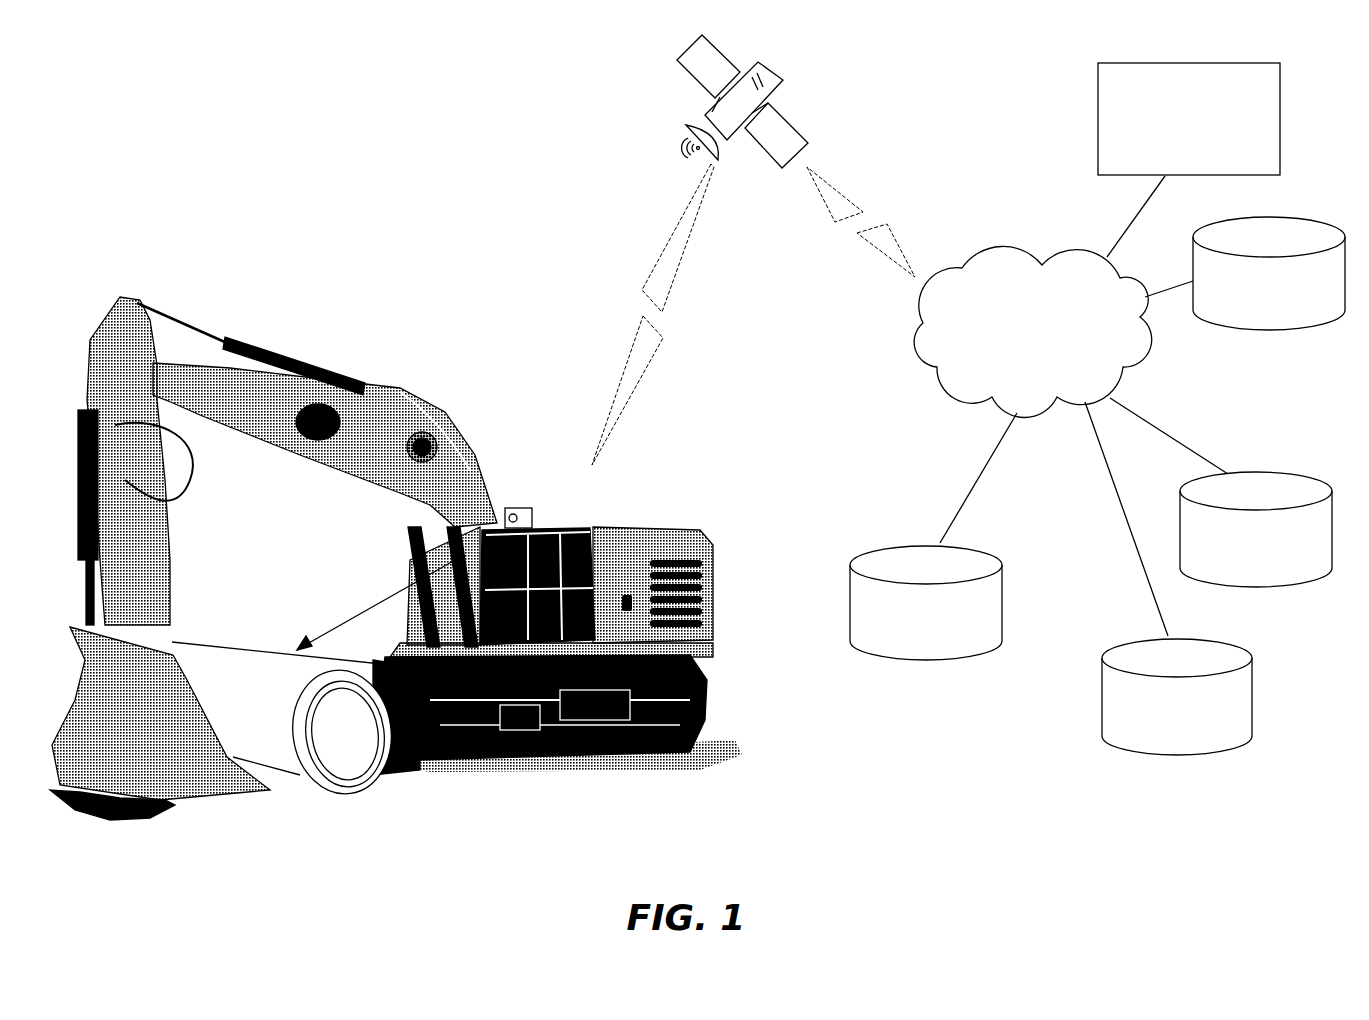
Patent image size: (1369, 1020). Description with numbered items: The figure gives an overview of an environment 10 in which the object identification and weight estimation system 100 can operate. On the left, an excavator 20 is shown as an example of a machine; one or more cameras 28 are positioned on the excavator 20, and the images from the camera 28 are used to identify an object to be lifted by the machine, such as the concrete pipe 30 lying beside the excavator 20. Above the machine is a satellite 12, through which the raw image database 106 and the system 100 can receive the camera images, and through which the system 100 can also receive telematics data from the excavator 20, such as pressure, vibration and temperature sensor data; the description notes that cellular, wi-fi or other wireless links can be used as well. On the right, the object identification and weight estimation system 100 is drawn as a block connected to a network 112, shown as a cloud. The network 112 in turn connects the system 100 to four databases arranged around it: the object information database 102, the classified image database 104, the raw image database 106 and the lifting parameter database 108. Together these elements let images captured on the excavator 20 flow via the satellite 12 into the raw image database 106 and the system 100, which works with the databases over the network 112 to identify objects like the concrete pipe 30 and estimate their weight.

The environment 10 is at (315, 128).
The satellite 12 is at (768, 78).
The excavator 20 is at (625, 735).
The camera 28 is at (523, 508).
The concrete pipe 30 is at (372, 768).
The object identification and weight estimation system 100 is at (1098, 62).
The object information database 102 is at (893, 660).
The classified image database 104 is at (1175, 755).
The raw image database 106 is at (1255, 587).
The lifting parameter database 108 is at (1250, 332).
The network 112 is at (1023, 243).